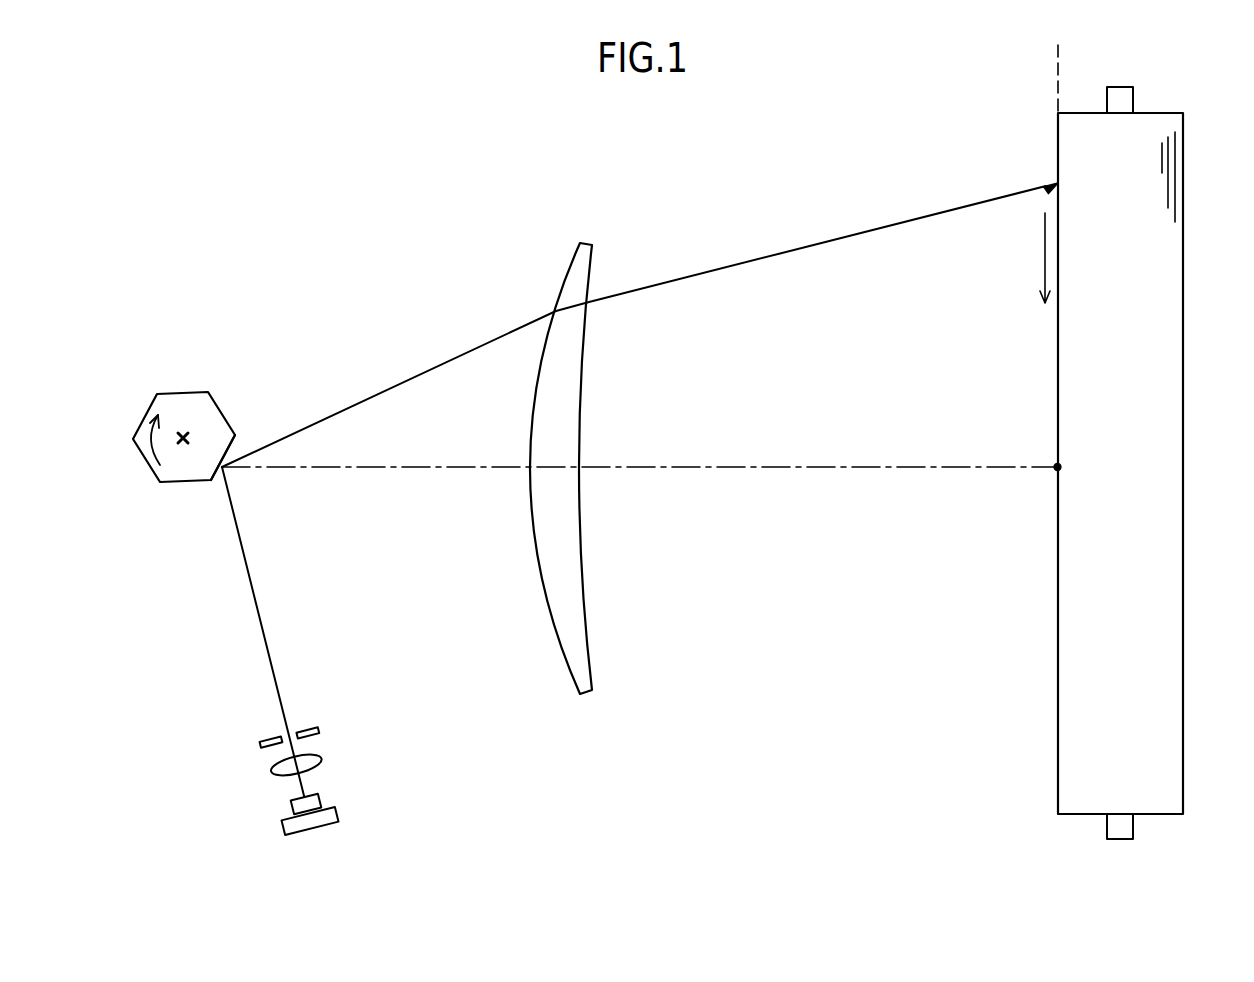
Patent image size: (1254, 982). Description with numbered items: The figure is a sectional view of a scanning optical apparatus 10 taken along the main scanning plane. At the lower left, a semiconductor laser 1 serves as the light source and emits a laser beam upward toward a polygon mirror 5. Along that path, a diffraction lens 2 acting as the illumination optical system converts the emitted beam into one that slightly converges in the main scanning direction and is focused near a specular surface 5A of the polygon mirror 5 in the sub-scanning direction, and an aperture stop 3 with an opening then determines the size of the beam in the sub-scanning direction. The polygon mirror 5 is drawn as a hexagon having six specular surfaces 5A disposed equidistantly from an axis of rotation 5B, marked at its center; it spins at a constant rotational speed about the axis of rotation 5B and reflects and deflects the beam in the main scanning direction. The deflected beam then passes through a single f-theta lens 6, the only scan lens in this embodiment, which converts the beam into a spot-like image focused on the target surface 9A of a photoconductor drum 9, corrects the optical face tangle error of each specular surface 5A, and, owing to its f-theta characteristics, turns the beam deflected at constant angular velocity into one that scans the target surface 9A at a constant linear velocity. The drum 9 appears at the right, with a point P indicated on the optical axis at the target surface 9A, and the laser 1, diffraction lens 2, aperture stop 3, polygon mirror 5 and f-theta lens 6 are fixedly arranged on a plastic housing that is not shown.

The scanning optical apparatus 10 is at (298, 180).
The semiconductor laser 1 is at (343, 815).
The diffraction lens 2 is at (323, 758).
The aperture stop 3 is at (322, 731).
The polygon mirror 5 is at (195, 400).
The specular surface 5A is at (237, 442).
The axis of rotation 5B is at (183, 447).
The f-theta lens 6 is at (588, 700).
The photoconductor drum 9 is at (1157, 309).
The target surface 9A is at (1057, 73).
The point on optical axis at drum surface P is at (1054, 465).